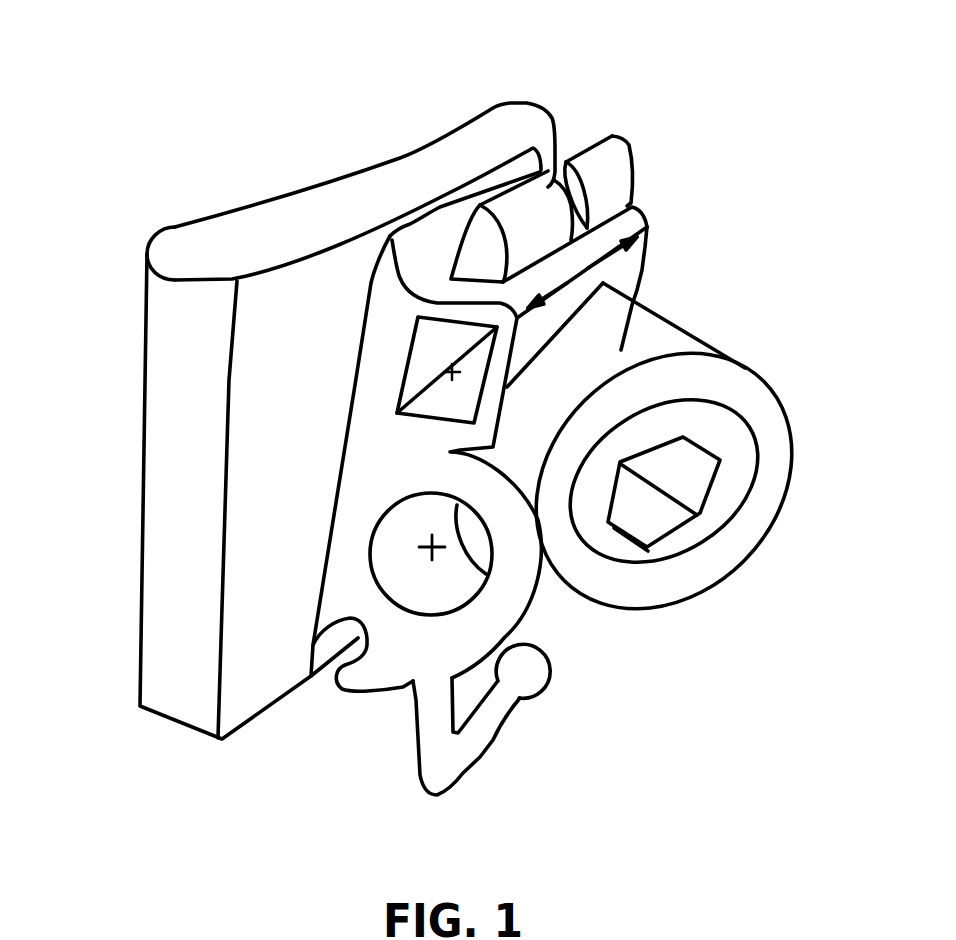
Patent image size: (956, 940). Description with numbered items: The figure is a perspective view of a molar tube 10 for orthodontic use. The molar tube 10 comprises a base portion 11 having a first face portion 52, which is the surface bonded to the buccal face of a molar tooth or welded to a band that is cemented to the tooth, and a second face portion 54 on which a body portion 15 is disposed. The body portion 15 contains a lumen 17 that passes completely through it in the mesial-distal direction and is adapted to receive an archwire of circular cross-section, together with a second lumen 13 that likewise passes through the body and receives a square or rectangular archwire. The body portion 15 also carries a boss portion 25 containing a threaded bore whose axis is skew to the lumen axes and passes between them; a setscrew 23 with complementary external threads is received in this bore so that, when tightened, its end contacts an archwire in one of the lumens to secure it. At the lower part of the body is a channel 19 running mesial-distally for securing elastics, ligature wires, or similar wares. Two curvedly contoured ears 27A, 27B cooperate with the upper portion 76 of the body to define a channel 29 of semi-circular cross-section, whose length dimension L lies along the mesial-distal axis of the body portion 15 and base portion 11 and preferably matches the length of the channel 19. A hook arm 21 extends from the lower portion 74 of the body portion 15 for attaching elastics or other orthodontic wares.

The molar tube 10 is at (710, 149).
The base portion 11 is at (200, 255).
The second lumen 13 is at (423, 372).
The body portion 15 is at (407, 470).
The lumen 17 is at (397, 533).
The channel 19 is at (353, 647).
The hook arm 21 is at (478, 742).
The setscrew 23 is at (717, 508).
The boss portion 25 is at (645, 333).
The ear 27A is at (526, 198).
The ear 27B is at (610, 162).
The channel 29 is at (443, 248).
The first face portion 52 is at (141, 584).
The second face portion 54 is at (277, 283).
The lower portion 74 is at (382, 673).
The upper portion 76 is at (393, 313).